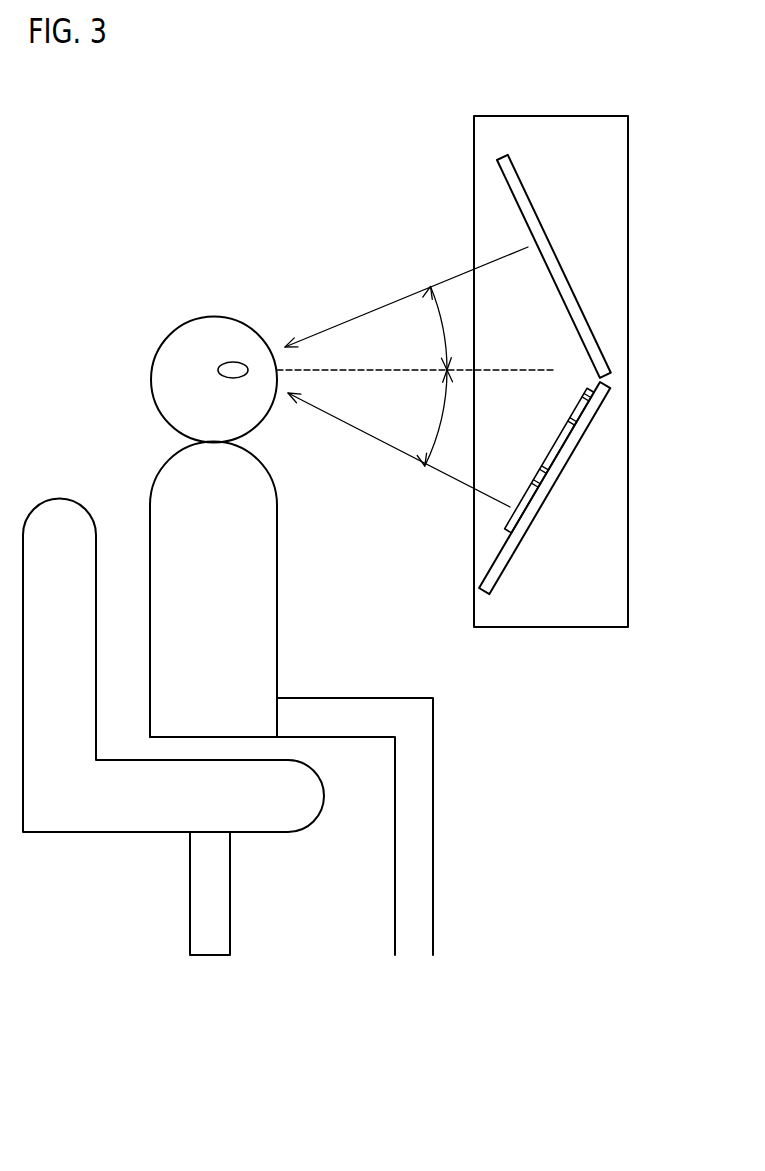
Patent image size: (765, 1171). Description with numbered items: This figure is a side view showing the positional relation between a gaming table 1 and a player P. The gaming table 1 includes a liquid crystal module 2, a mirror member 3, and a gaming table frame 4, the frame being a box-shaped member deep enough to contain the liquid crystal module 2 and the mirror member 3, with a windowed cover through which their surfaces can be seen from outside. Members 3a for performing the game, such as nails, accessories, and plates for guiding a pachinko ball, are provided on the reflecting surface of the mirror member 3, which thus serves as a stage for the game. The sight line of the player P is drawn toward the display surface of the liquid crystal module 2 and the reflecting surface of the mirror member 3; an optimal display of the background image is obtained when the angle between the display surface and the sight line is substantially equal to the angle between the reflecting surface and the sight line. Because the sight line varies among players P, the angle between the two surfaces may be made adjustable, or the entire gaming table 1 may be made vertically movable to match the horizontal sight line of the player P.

The gaming table 1 is at (574, 330).
The liquid crystal module 2 is at (552, 257).
The mirror member 3 is at (544, 488).
The members for performing a game 3a is at (553, 445).
The gaming table frame 4 is at (628, 262).
The player P is at (165, 312).